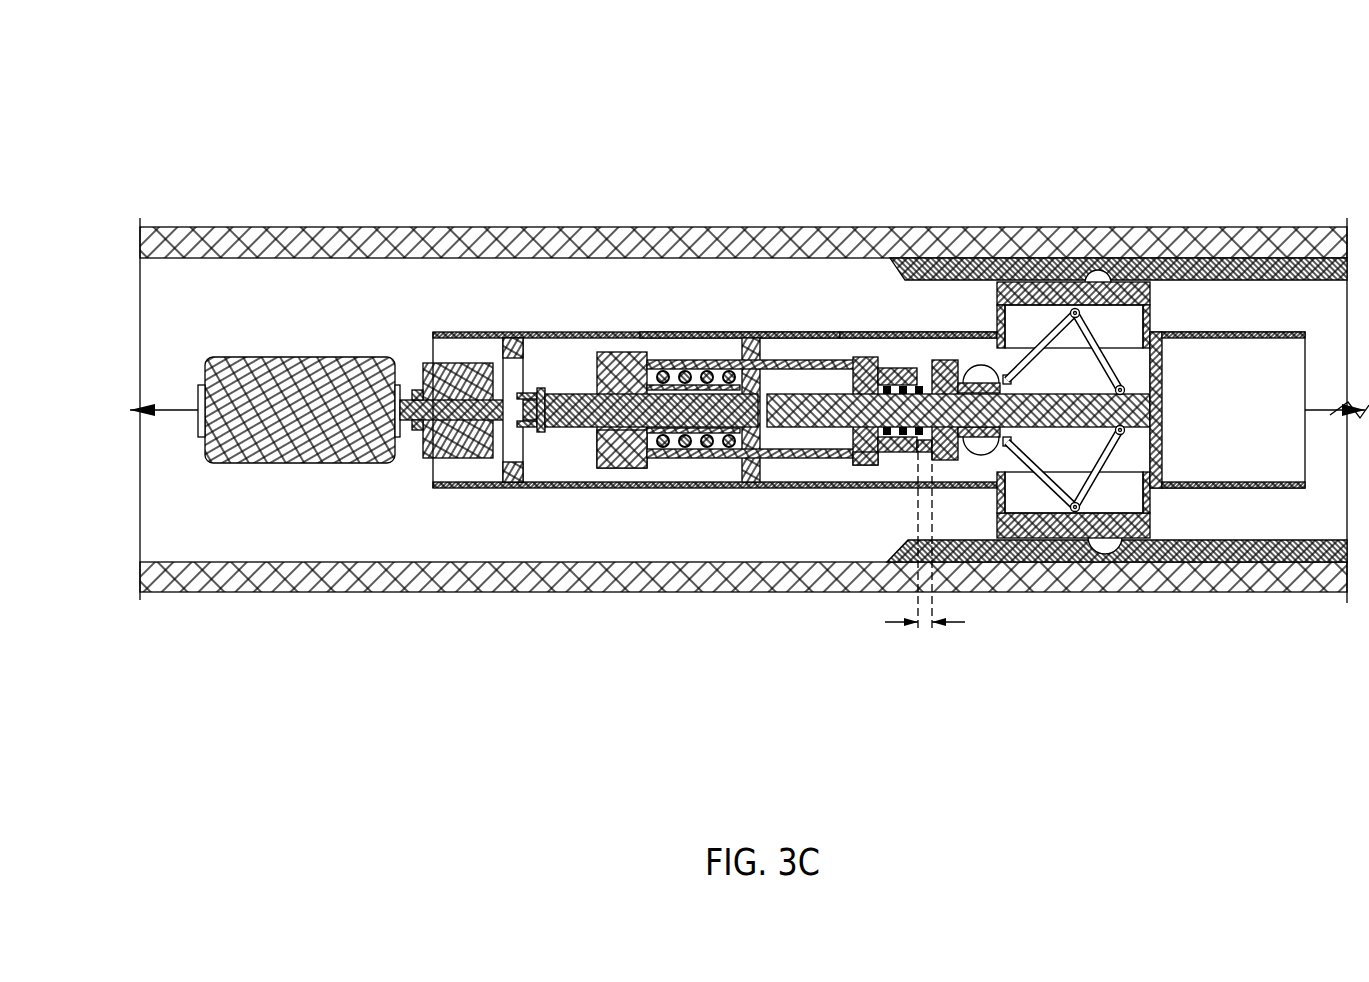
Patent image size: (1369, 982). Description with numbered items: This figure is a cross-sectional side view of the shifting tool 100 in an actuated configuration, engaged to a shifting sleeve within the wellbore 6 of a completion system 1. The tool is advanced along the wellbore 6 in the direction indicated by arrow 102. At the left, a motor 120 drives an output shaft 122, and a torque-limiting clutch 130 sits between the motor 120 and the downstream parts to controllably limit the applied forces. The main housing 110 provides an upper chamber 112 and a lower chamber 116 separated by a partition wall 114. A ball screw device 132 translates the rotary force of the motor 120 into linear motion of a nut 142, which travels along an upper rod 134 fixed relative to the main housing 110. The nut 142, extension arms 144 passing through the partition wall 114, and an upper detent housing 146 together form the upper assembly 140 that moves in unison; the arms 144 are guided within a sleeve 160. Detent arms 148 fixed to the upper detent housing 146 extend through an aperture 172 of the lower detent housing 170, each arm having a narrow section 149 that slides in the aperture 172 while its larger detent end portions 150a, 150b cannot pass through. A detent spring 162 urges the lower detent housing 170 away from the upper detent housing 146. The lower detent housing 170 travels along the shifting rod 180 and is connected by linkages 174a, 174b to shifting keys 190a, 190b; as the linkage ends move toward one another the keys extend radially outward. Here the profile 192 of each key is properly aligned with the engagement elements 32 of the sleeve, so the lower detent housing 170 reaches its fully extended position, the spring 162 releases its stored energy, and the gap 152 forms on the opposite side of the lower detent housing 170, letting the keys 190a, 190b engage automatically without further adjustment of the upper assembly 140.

The completion system 1 is at (326, 96).
The wellbore 6 is at (414, 236).
The shifting tool 100 is at (384, 297).
The direction of movement 102 is at (170, 400).
The motor 120 is at (252, 360).
The output shaft 122 is at (405, 430).
The torque-limiting clutch 130 is at (470, 372).
The main housing 110 is at (510, 335).
The upper chamber 112 is at (720, 333).
The partition wall 114 is at (748, 340).
The lower chamber 116 is at (818, 345).
The ball screw device 132 is at (512, 450).
The upper rod 134 is at (575, 420).
The upper assembly 140 is at (600, 352).
The nut 142 is at (615, 462).
The extension arms 144 is at (660, 365).
The sleeve 160 is at (700, 360).
The upper detent housing 146 is at (872, 365).
The detent arm 148 is at (887, 458).
The narrow section 149 is at (945, 462).
The detent spring 162 is at (860, 468).
The lower detent housing 170 is at (938, 362).
The aperture 172 is at (1012, 520).
The detent end portion 150a is at (1010, 380).
The detent end portion 150b is at (1010, 440).
The linkage 174a is at (1125, 375).
The linkage 174b is at (1125, 440).
The shifting rod 180 is at (1142, 407).
The shifting key 190a is at (1000, 268).
The shifting key 190b is at (998, 565).
The profile 192 is at (1098, 285).
The gap 152 is at (885, 622).
The engagement element 32 is at (1090, 537).